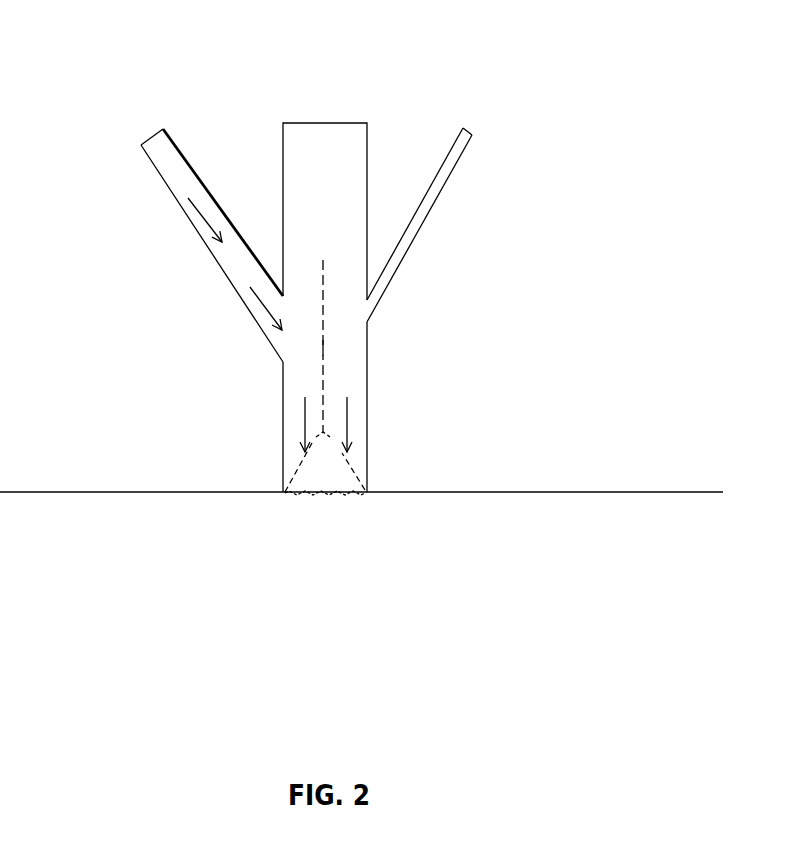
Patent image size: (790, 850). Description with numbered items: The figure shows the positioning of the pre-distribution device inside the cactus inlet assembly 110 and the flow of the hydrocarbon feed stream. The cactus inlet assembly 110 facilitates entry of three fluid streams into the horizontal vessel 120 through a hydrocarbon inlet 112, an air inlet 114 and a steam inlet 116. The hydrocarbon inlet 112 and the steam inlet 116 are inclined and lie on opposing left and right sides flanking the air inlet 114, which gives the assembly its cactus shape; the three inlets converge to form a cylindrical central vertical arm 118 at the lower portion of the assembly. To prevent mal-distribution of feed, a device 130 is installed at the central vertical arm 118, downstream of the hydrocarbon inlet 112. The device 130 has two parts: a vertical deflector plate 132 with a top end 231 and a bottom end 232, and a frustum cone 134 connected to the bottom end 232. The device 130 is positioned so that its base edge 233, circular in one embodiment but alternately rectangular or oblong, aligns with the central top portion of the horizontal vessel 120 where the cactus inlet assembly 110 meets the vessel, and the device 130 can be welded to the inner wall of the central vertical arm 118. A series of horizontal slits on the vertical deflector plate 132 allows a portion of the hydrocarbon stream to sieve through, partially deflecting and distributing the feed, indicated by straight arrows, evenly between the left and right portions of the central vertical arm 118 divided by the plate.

The cactus inlet assembly 110 is at (341, 62).
The hydrocarbon inlet 112 is at (158, 134).
The air inlet 114 is at (372, 275).
The steam inlet 116 is at (468, 134).
The central vertical arm 118 is at (368, 395).
The horizontal vessel 120 is at (615, 543).
The device 130 is at (359, 307).
The vertical deflector plate 132 is at (323, 348).
The frustum cone 134 is at (348, 463).
The top end 231 is at (323, 262).
The bottom end 232 is at (326, 437).
The base edge 233 is at (343, 496).